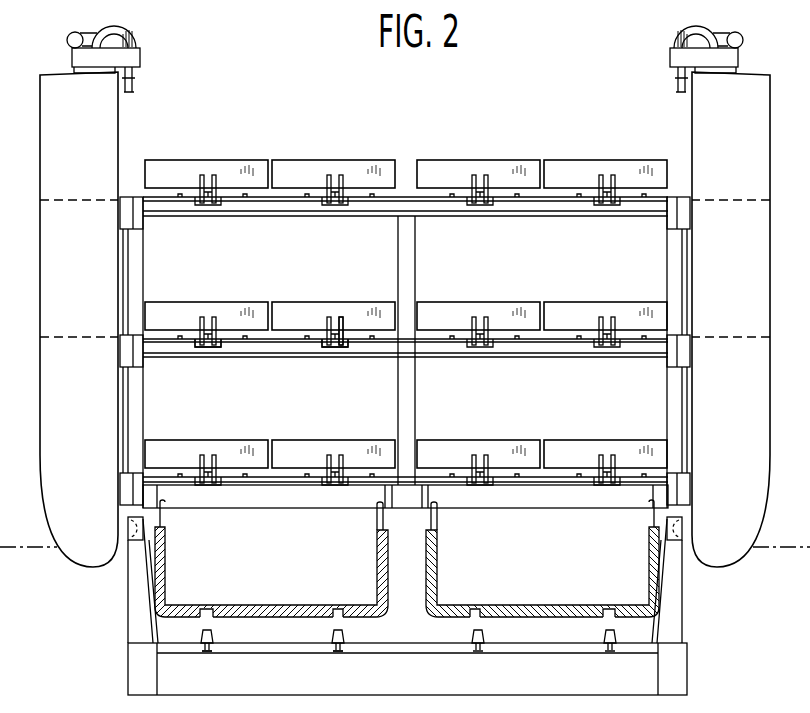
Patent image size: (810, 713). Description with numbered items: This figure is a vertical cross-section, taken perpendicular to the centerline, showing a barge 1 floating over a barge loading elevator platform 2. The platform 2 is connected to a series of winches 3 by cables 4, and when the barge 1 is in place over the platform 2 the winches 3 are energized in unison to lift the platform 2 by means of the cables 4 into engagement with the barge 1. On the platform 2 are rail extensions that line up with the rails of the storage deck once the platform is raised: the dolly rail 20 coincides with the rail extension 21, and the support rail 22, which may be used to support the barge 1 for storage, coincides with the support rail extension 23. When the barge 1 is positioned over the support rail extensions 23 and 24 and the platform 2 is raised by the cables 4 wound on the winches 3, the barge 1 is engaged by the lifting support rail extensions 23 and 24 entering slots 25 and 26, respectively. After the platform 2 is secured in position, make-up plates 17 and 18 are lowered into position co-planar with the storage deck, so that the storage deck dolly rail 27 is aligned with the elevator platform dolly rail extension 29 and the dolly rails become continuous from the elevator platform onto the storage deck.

The barge 1 is at (389, 571).
The barge loading elevator platform 2 is at (457, 687).
The winches 3 is at (125, 25).
The cables 4 is at (134, 79).
The make-up plate 17 is at (242, 302).
The make-up plate 18 is at (328, 302).
The dolly rail 20 is at (327, 347).
The rail extension 21 is at (328, 652).
The support rail 22 is at (343, 335).
The support rail extension 23 is at (340, 653).
The support rail extension 24 is at (203, 652).
The slot 25 is at (338, 605).
The slot 26 is at (208, 606).
The storage deck dolly rail 27 is at (218, 347).
The elevator platform dolly rail extension 29 is at (216, 653).